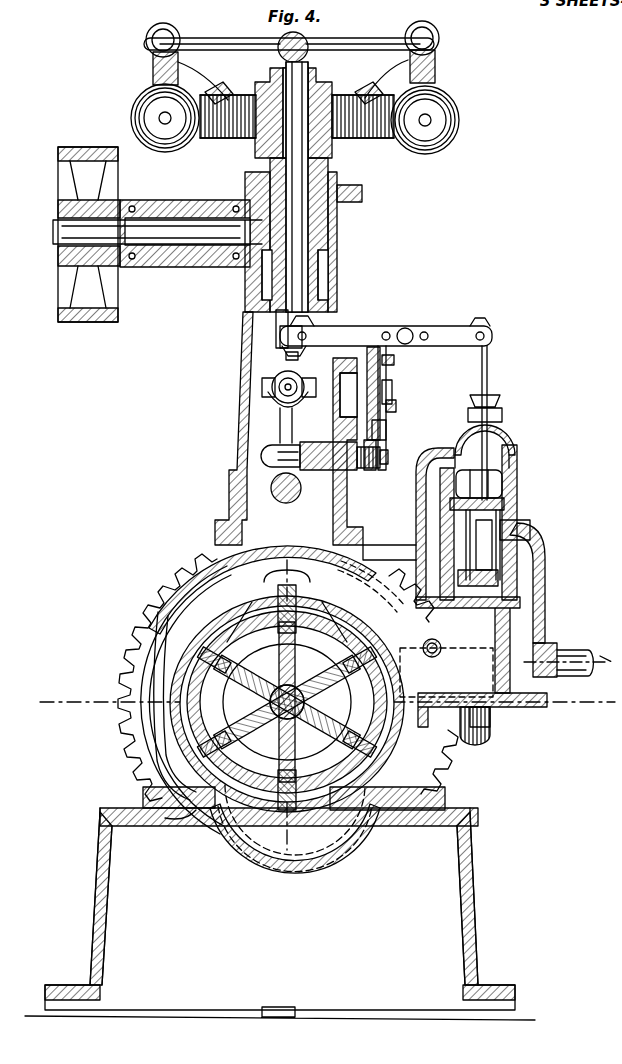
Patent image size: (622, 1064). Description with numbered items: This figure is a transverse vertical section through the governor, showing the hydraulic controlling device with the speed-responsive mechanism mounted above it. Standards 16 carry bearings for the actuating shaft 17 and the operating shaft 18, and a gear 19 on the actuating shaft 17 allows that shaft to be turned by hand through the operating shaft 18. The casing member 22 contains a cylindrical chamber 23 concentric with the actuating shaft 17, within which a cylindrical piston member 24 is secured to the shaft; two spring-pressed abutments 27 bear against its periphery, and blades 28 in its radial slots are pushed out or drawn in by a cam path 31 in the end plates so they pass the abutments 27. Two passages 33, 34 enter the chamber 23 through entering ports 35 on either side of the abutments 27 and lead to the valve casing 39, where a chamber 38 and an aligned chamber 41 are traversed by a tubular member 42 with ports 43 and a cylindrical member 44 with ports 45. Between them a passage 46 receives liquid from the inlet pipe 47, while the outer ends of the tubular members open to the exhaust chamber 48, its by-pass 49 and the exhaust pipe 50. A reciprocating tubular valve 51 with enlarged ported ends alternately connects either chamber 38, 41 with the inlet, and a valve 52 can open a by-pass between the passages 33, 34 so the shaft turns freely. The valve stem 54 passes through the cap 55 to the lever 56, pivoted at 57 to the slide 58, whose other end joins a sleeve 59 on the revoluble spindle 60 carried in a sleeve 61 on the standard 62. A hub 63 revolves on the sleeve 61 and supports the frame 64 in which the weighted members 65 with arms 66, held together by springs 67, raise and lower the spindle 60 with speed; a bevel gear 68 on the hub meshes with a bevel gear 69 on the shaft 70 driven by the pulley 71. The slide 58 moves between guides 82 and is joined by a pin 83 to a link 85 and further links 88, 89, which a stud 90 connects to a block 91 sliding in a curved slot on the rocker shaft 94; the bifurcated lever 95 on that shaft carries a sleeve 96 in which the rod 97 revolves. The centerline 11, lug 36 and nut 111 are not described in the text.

The axis / center line 11 is at (330, 705).
The standards 16 is at (486, 316).
The actuating shaft 17 is at (257, 790).
The operating shaft 18 is at (272, 480).
The gear 19 is at (150, 612).
The casing member 22 is at (186, 820).
The cylindrical chamber 23 is at (212, 830).
The cylindrical piston member 24 is at (205, 690).
The spring-pressed abutments 27 is at (291, 590).
The blades 28 is at (190, 672).
The cam path 31 is at (277, 702).
The passage 33 is at (372, 578).
The passage 34 is at (304, 866).
The entering ports 35 is at (236, 590).
The frame wall 36 is at (368, 545).
The chamber 38 is at (504, 498).
The valve casing 39 is at (520, 478).
The chamber 41 is at (500, 580).
The tubular member 42 is at (518, 464).
The ports 43 is at (504, 512).
The cylindrical member 44 is at (522, 600).
The ports 45 is at (494, 568).
The passage 46 is at (500, 550).
The inlet pipe 47 is at (570, 648).
The exhaust chamber 48 is at (548, 700).
The by-pass 49 is at (432, 478).
The exhaust pipe 50 is at (492, 730).
The reciprocating tubular valve 51 is at (532, 530).
The valve 52 is at (428, 658).
The valve stem 54 is at (489, 360).
The cap 55 is at (500, 436).
The lever 56 is at (436, 336).
The pivot 57 is at (405, 328).
The slide 58 is at (385, 330).
The sleeve 59 is at (276, 336).
The revoluble spindle 60 is at (310, 272).
The sleeve 61 is at (340, 142).
The standard 62 is at (336, 236).
The hub 63 is at (262, 146).
The frame 64 is at (380, 60).
The weighted members 65 is at (142, 110).
The arm 66 is at (258, 56).
The springs 67 is at (212, 138).
The bevel gear 68 is at (350, 196).
The bevel gear 69 is at (222, 270).
The shaft 70 is at (176, 250).
The pulley 71 is at (88, 322).
The guides 82 is at (390, 378).
The pin 83 is at (394, 360).
The link 85 is at (392, 390).
The link 88 is at (380, 470).
The link 89 is at (388, 432).
The stud 90 is at (388, 460).
The block 91 is at (362, 470).
The rocker shaft 94 is at (316, 482).
The bifurcated lever 95 is at (280, 428).
The sleeve 96 is at (272, 378).
The rod 97 is at (270, 402).
The adjusting nut 111 is at (396, 406).